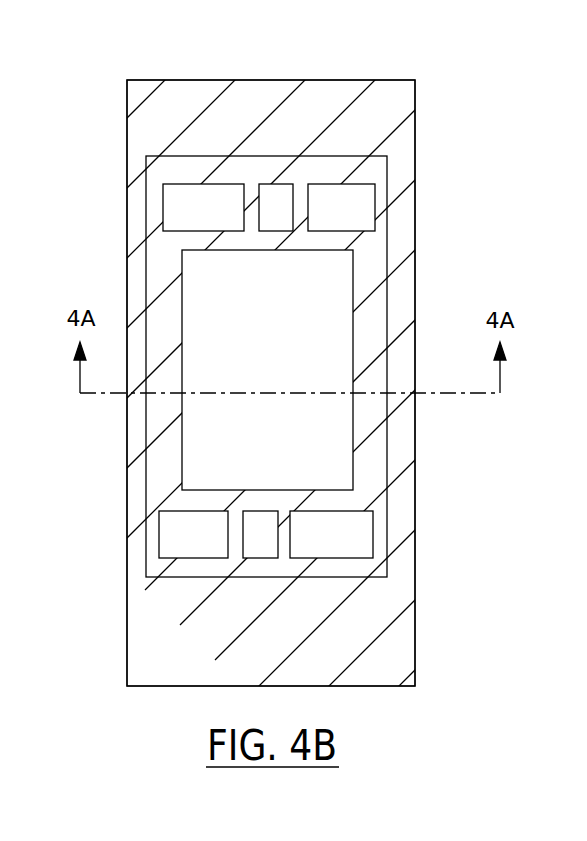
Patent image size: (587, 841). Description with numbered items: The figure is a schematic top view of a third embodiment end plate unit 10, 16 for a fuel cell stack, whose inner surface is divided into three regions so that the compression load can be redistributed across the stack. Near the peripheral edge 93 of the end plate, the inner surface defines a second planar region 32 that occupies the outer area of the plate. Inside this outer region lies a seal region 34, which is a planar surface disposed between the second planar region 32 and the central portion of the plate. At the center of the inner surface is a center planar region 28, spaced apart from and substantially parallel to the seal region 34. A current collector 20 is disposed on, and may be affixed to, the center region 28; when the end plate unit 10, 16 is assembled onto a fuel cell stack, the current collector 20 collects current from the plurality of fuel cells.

The end plate unit 10 is at (405, 178).
The end plate unit 16 is at (319, 383).
The current collector 20 is at (343, 314).
The center planar region 28 is at (287, 488).
The second planar region 32 is at (314, 90).
The seal region 34 is at (340, 160).
The peripheral edge 93 is at (222, 80).